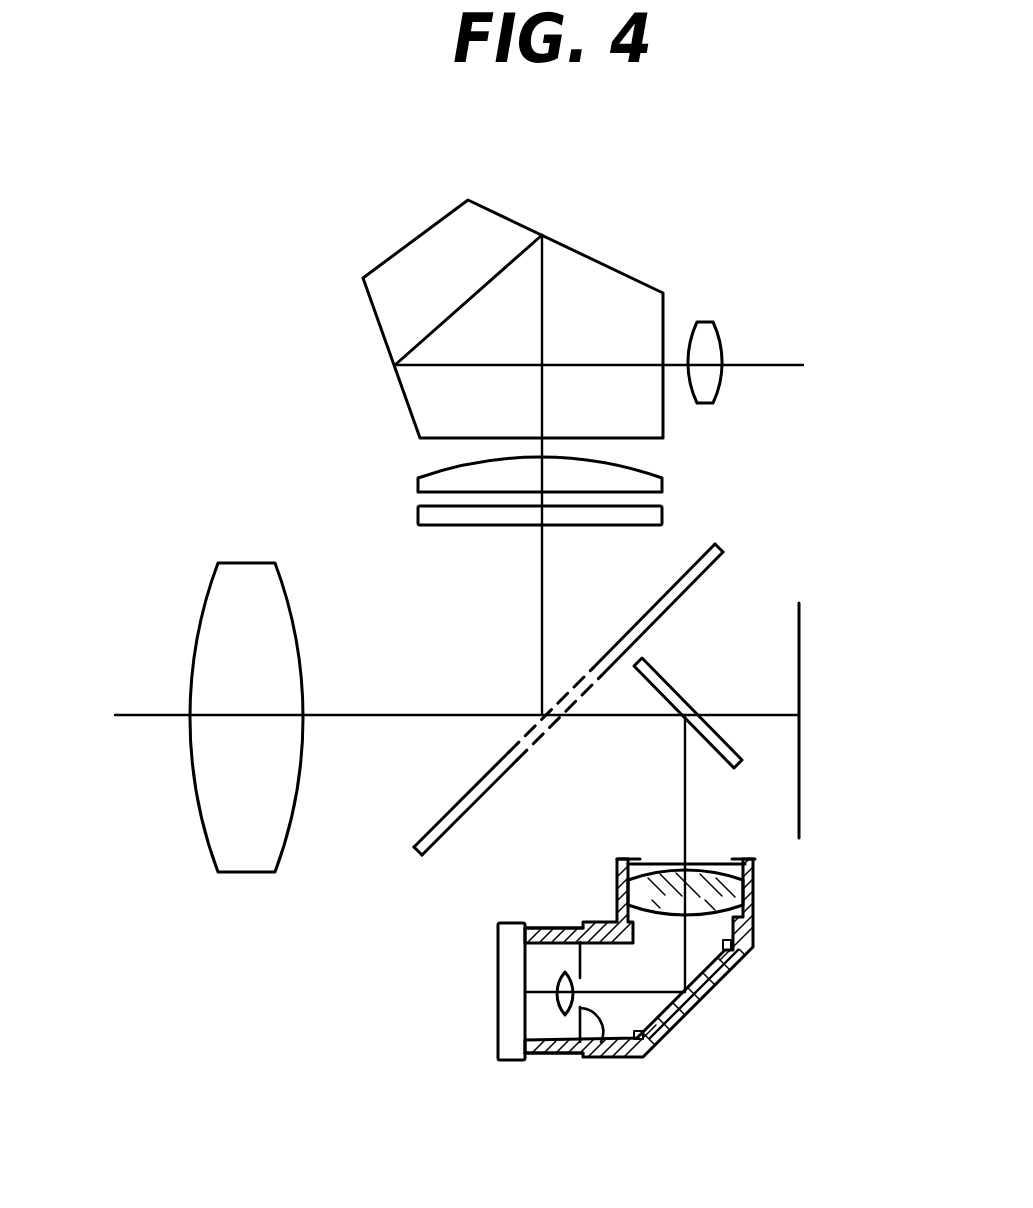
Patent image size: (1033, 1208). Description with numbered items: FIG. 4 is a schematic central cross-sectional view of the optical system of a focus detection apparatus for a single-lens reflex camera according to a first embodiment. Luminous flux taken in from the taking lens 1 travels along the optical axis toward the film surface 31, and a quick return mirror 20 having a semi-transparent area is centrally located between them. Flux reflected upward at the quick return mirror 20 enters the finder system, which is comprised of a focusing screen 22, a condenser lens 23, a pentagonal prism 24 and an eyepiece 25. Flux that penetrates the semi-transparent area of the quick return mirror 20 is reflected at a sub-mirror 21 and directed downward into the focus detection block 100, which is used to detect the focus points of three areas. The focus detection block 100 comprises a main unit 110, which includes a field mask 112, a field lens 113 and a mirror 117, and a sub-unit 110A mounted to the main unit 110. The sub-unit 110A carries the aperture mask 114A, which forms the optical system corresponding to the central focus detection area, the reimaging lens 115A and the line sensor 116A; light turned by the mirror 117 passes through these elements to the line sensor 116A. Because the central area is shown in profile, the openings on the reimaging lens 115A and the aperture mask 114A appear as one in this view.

The taking lens 1 is at (243, 852).
The quick return mirror 20 is at (417, 851).
The sub-mirror 21 is at (660, 669).
The focusing screen 22 is at (418, 513).
The condenser lens 23 is at (418, 481).
The pentagonal prism 24 is at (585, 282).
The eyepiece 25 is at (712, 336).
The film surface 31 is at (802, 624).
The focus detection block 100 is at (835, 843).
The main unit 110 is at (615, 906).
The sub-unit 110A is at (542, 925).
The field mask 112 is at (718, 862).
The field lens 113 is at (733, 892).
The aperture mask 114A is at (603, 1042).
The reimaging lens 115A is at (555, 1010).
The line sensor 116A is at (498, 1050).
The mirror 117 is at (713, 987).